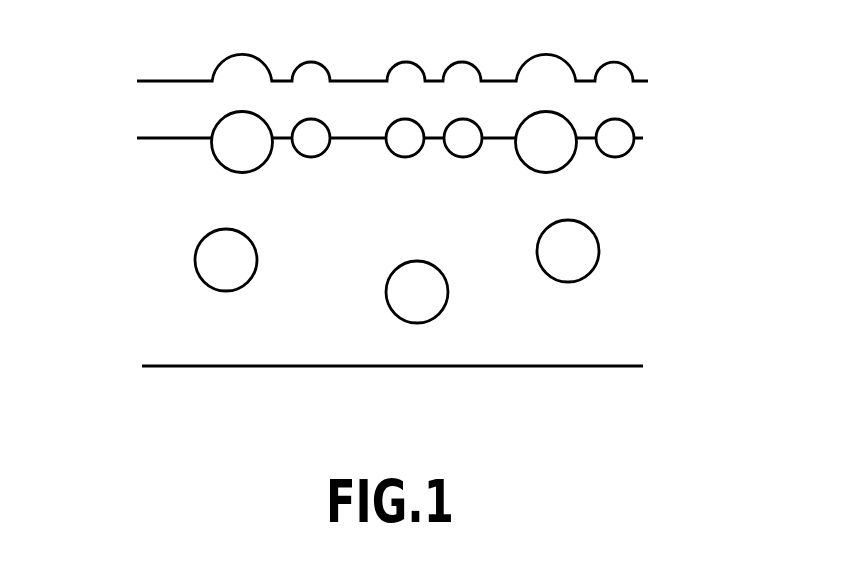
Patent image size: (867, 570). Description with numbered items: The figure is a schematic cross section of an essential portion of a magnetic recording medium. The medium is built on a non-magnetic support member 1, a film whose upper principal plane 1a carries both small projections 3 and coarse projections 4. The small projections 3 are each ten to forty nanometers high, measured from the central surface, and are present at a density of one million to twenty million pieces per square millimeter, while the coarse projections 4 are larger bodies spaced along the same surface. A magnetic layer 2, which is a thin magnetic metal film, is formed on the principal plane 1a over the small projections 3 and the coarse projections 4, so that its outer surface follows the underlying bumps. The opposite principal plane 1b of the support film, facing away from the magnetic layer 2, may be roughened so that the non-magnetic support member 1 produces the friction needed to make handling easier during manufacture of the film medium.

The non-magnetic support member 1 is at (407, 309).
The principal plane 1a is at (150, 138).
The another principal plane 1b is at (150, 366).
The magnetic layer 2 is at (400, 86).
The small projections 3 is at (612, 119).
The coarse projections 4 is at (263, 120).